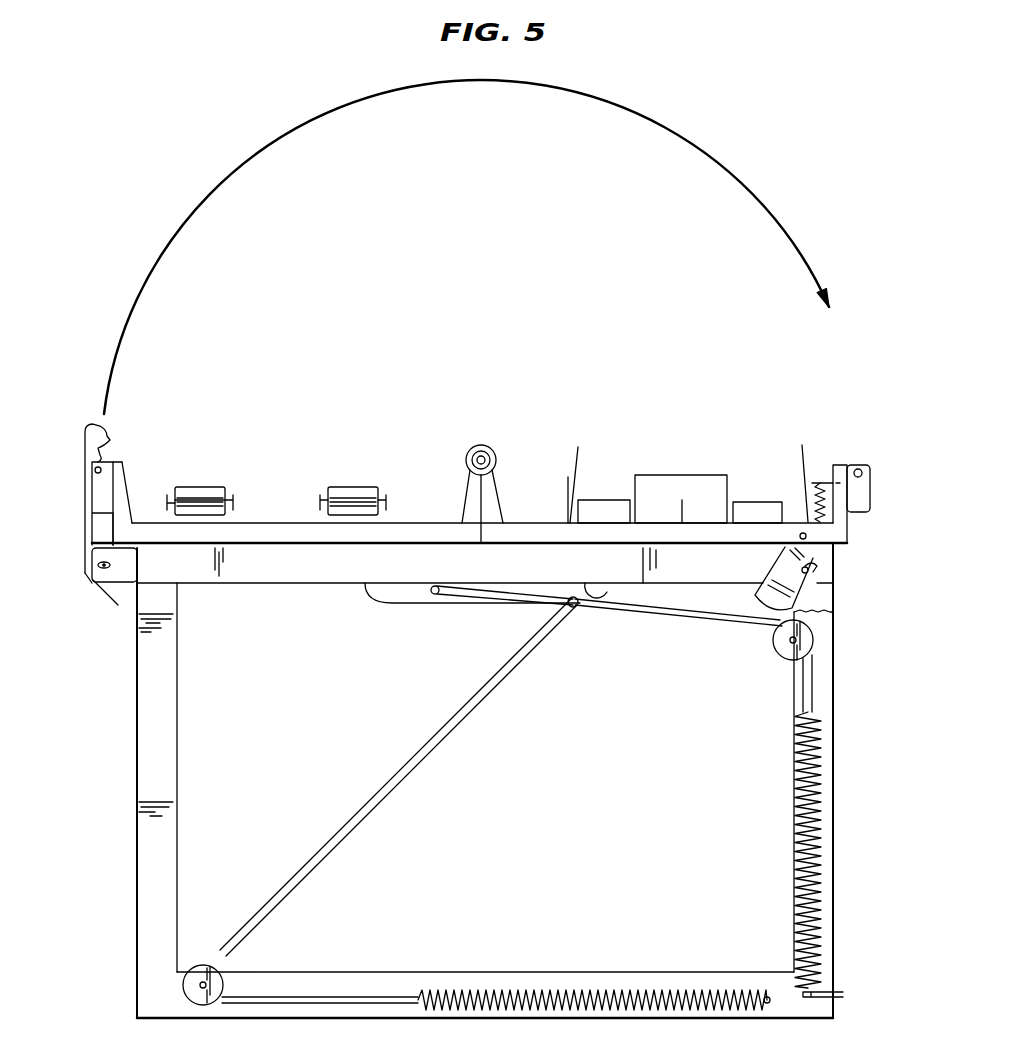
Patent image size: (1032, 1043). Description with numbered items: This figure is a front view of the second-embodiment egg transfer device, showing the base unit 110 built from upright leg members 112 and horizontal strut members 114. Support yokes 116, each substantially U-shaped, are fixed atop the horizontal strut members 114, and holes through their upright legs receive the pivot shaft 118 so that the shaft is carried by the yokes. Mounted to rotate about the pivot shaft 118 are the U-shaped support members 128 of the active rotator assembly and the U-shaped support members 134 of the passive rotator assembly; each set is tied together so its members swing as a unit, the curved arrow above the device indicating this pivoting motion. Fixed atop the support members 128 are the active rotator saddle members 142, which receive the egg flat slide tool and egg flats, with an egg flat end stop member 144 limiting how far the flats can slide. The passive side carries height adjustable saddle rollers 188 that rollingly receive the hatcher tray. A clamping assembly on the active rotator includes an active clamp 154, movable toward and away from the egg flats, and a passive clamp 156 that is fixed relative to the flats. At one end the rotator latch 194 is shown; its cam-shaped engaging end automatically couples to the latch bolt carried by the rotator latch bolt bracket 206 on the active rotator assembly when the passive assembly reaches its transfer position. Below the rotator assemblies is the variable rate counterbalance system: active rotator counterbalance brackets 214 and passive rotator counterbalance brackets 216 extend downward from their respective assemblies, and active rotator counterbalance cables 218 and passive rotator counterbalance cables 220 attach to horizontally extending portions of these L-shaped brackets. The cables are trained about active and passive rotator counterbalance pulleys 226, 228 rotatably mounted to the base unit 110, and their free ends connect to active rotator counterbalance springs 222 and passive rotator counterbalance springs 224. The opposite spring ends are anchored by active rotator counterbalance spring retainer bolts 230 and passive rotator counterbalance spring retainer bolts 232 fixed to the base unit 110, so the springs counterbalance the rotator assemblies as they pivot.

The base unit 110 is at (124, 851).
The upright leg members 112 is at (177, 841).
The horizontal strut members 114 is at (285, 586).
The support yokes 116 is at (470, 455).
The pivot shaft 118 is at (478, 445).
The U-shaped support members 128 is at (545, 532).
The U-shaped support members 134 is at (152, 532).
The active rotator saddle members 142 is at (605, 500).
The egg flat end stop member 144 is at (686, 483).
The active clamp 154 is at (810, 470).
The passive clamp 156 is at (568, 477).
The height adjustable saddle rollers 188 is at (338, 487).
The rotator latch 194 is at (88, 533).
The rotator latch bolt bracket 206 is at (868, 490).
The active rotator counterbalance brackets 214 is at (388, 600).
The passive rotator counterbalance brackets 216 is at (584, 600).
The active rotator counterbalance cables 218 is at (688, 620).
The passive rotator counterbalance cables 220 is at (385, 800).
The active rotator counterbalance springs 222 is at (820, 735).
The passive rotator counterbalance springs 224 is at (478, 990).
The active rotator counterbalance pulleys 226 is at (786, 656).
The passive rotator counterbalance pulleys 228 is at (220, 968).
The active rotator counterbalance spring retainer bolts 230 is at (840, 992).
The passive rotator counterbalance spring retainer bolts 232 is at (765, 997).